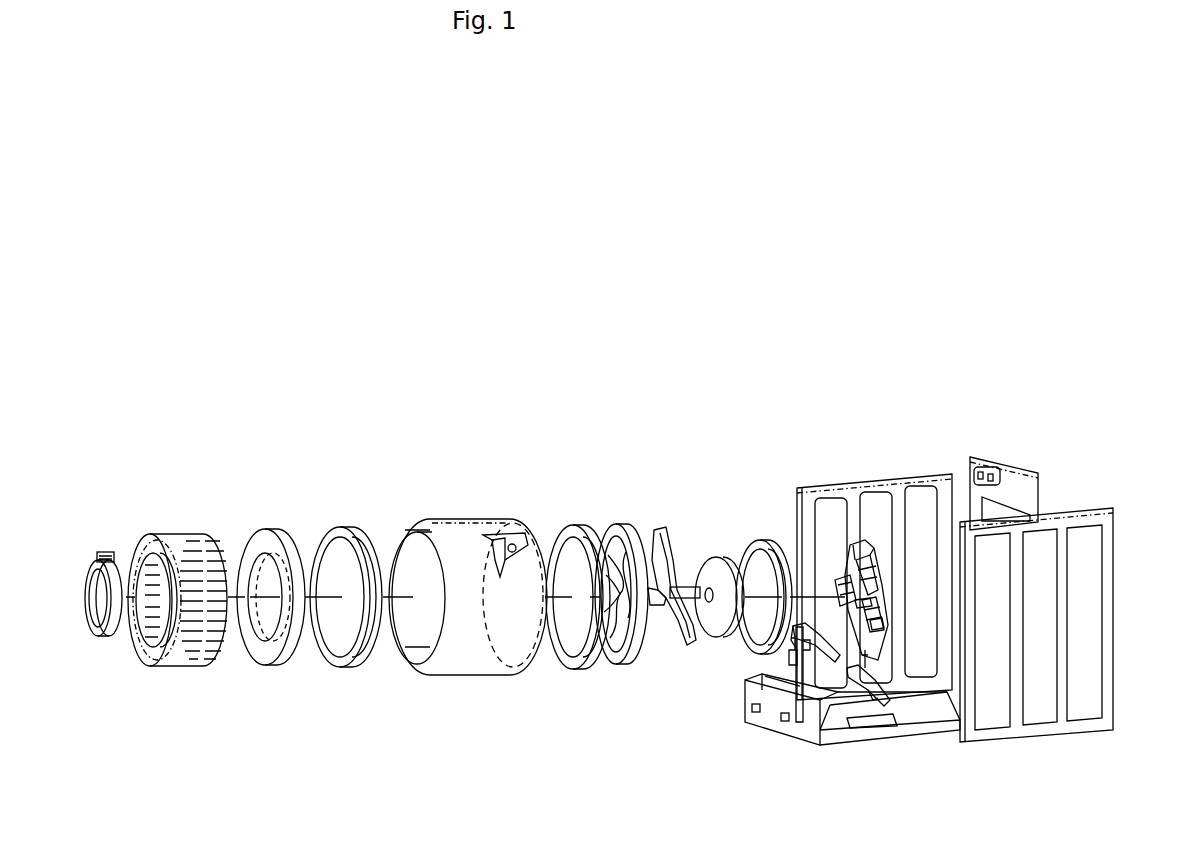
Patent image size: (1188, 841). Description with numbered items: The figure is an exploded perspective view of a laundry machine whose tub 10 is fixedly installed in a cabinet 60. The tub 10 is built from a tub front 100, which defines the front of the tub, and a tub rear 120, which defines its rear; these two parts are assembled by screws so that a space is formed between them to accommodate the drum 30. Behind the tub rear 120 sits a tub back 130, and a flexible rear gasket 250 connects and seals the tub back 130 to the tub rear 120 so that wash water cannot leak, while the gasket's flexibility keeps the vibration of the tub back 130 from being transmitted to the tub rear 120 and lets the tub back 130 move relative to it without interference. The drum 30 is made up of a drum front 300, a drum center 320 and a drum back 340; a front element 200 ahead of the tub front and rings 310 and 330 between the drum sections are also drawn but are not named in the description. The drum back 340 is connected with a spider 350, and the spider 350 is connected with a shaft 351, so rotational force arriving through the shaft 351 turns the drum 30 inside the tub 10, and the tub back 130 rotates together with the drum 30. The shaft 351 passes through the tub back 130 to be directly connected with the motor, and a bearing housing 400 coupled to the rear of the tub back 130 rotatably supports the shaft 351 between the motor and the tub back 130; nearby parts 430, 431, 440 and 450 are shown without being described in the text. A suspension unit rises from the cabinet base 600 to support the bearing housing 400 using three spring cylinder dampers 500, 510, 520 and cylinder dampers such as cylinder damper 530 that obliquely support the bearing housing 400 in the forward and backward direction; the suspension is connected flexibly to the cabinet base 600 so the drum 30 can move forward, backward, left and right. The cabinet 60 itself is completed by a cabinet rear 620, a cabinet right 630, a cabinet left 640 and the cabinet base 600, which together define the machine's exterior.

The tub 10 is at (187, 470).
The tub front 100 is at (187, 533).
The tub rear 120 is at (473, 517).
The tub back 130 is at (705, 567).
The cap ring 200 is at (87, 633).
The rear gasket 250 is at (760, 540).
The drum 30 is at (597, 747).
The drum front 300 is at (270, 663).
The second lens ring 310 is at (353, 662).
The drum center 320 is at (440, 655).
The fourth lens ring 330 is at (566, 660).
The drum back 340 is at (610, 657).
The spider 350 is at (683, 640).
The shaft 351 is at (688, 550).
The bearing housing 400 is at (862, 573).
The gear 440 is at (828, 630).
The guide 430 is at (873, 602).
The guide slot 431 is at (873, 623).
The lever 450 is at (873, 683).
The spring cylinder damper 500 is at (885, 685).
The spring cylinder damper 510 is at (795, 650).
The spring cylinder damper 520 is at (840, 697).
The cylinder damper 530 is at (840, 647).
The cabinet base 600 is at (907, 730).
The cabinet 60 is at (1082, 447).
The cabinet rear 620 is at (1010, 474).
The cabinet right 630 is at (910, 483).
The cabinet left 640 is at (1062, 522).